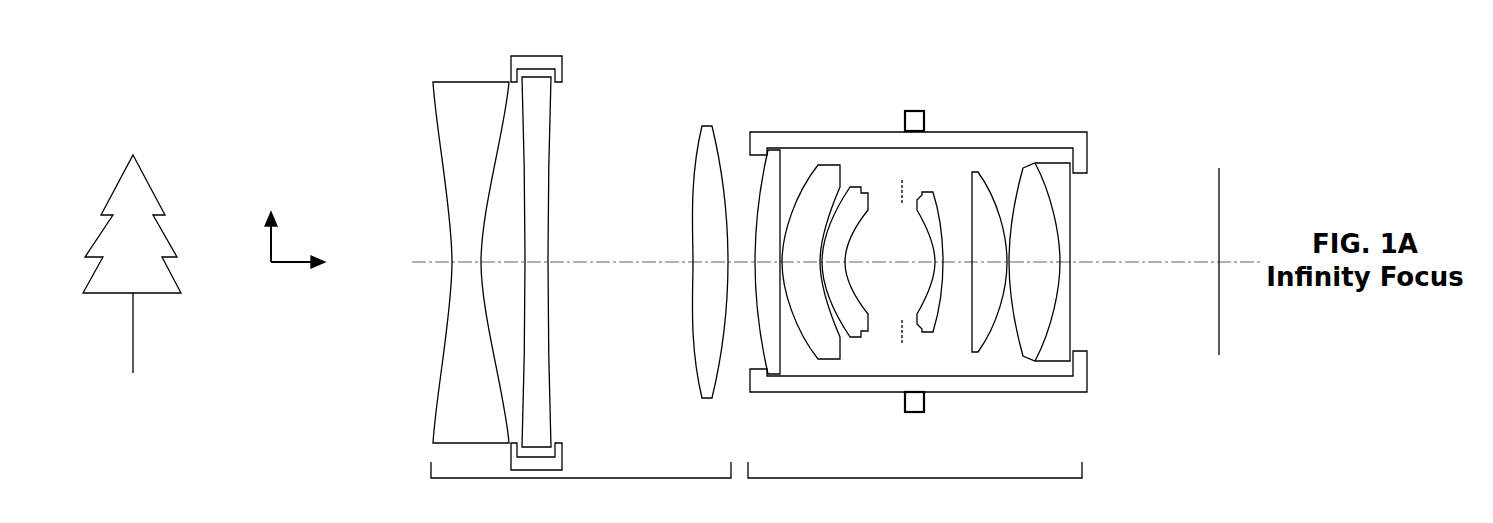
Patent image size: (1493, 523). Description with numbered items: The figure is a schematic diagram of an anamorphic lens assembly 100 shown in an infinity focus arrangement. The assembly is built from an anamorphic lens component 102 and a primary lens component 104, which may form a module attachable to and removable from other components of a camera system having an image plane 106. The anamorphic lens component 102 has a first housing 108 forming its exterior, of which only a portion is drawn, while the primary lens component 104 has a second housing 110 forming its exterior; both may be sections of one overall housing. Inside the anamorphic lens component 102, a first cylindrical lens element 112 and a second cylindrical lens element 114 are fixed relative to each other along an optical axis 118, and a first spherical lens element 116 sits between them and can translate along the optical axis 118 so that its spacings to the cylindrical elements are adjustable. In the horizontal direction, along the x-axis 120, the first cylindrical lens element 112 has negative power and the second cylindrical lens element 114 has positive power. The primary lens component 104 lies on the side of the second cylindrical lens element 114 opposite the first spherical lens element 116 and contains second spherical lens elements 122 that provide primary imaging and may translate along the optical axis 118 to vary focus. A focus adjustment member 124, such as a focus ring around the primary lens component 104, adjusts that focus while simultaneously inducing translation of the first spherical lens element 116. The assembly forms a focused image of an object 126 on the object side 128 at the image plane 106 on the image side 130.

The anamorphic lens assembly 100 is at (1155, 115).
The anamorphic lens component 102 is at (483, 522).
The primary lens component 104 is at (1003, 522).
The image plane 106 is at (1219, 343).
The first housing 108 is at (531, 56).
The second housing 110 is at (880, 131).
The first cylindrical lens element 112 is at (448, 345).
The second cylindrical lens element 114 is at (688, 290).
The first spherical lens element 116 is at (548, 368).
The optical axis 118 is at (1186, 262).
The x-axis 120 is at (268, 248).
The second spherical lens elements 122 is at (906, 180).
The focus adjustment member 124 is at (915, 111).
The object 126 is at (133, 155).
The object side 128 is at (377, 203).
The image side 130 is at (1162, 203).